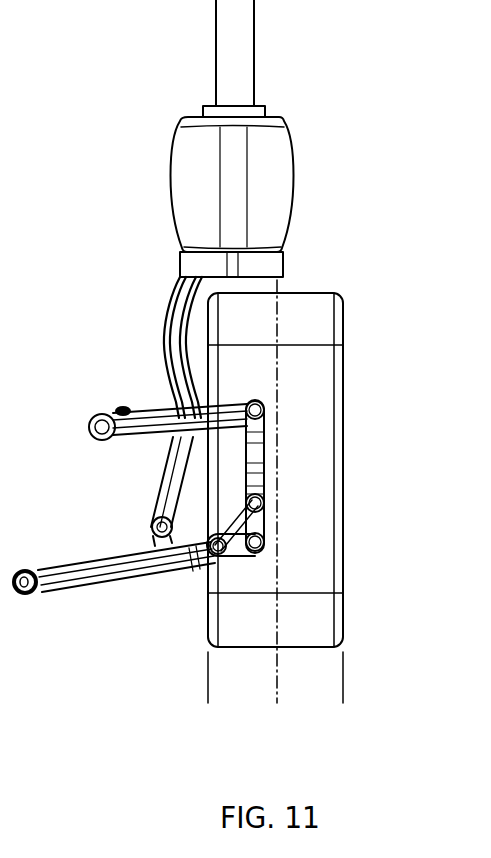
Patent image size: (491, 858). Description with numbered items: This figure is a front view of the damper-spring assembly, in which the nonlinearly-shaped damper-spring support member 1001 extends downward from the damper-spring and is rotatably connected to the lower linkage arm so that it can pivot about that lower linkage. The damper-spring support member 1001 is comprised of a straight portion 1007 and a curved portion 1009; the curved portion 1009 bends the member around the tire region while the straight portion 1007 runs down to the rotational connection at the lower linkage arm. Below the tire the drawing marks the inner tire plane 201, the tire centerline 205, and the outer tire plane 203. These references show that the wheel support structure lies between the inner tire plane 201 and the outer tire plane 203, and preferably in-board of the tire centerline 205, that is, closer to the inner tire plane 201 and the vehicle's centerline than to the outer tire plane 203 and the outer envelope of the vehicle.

The damper-spring support member 1001 is at (140, 377).
The straight portion 1007 is at (173, 483).
The curved portion 1009 is at (173, 335).
The inner tire plane 201 is at (198, 691).
The outer tire plane 203 is at (335, 693).
The tire centerline 205 is at (265, 693).